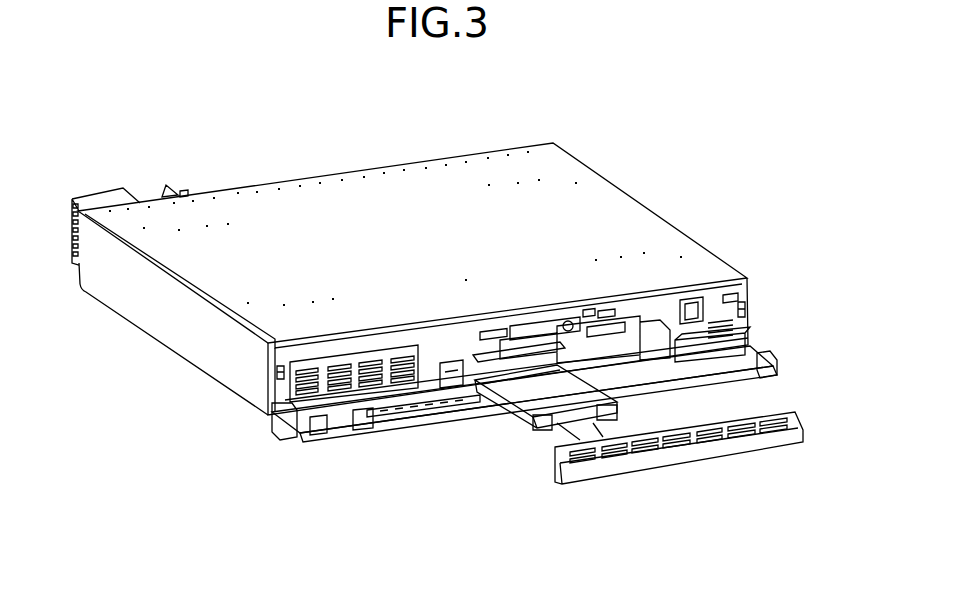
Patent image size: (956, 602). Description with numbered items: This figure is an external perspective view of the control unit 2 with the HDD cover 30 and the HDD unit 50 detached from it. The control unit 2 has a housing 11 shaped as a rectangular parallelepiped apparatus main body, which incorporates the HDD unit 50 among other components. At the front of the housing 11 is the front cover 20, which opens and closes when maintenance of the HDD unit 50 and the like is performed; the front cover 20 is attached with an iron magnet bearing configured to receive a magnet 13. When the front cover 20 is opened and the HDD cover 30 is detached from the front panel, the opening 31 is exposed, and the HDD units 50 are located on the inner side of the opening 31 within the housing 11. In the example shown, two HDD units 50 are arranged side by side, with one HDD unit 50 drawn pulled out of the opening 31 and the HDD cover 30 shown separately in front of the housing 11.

The control unit 2 is at (556, 112).
The housing 11 is at (125, 293).
The magnet 13 is at (280, 370).
The front cover 20 is at (283, 428).
The HDD cover 30 is at (686, 456).
The opening 31 is at (457, 367).
The HDD unit 50 is at (632, 345).